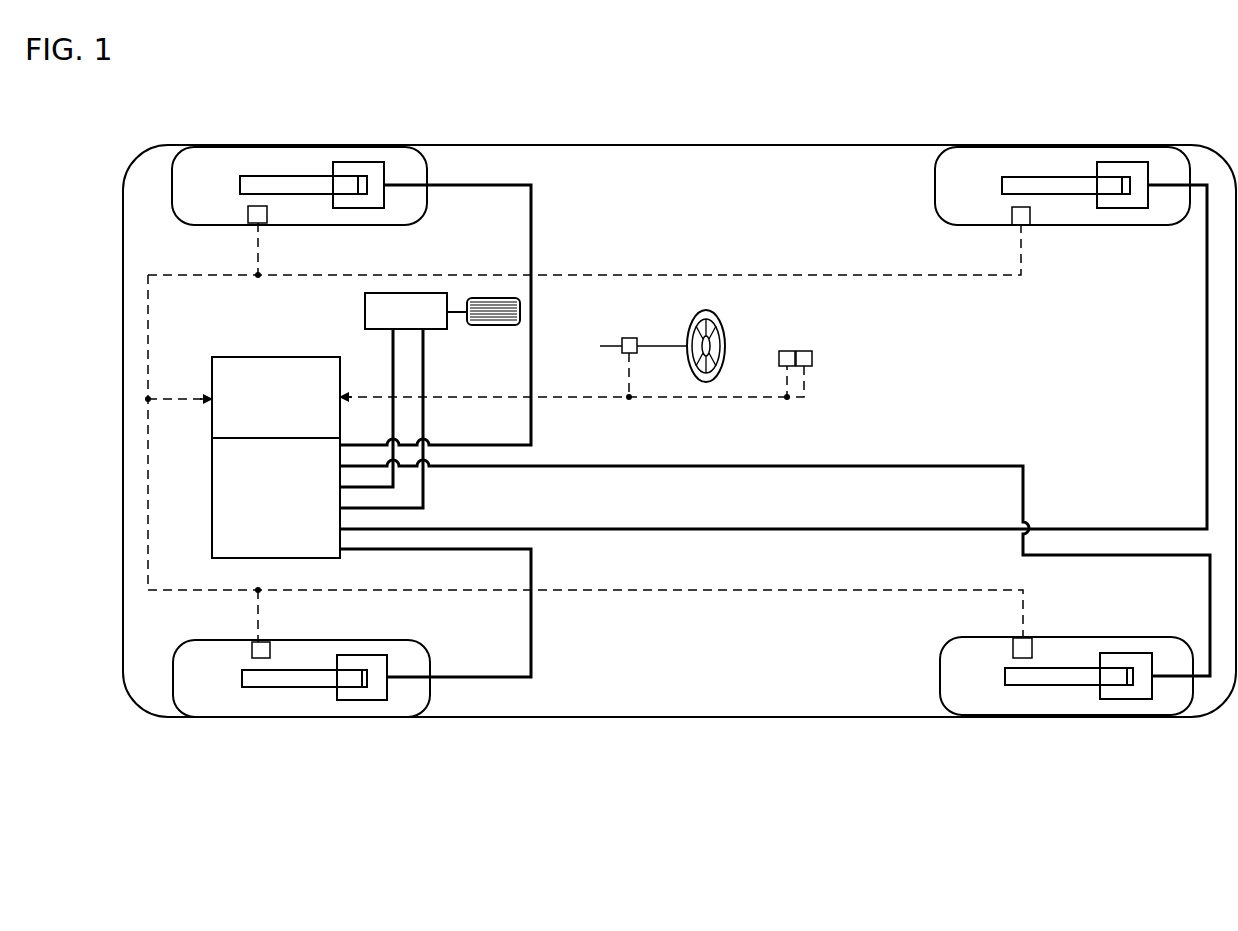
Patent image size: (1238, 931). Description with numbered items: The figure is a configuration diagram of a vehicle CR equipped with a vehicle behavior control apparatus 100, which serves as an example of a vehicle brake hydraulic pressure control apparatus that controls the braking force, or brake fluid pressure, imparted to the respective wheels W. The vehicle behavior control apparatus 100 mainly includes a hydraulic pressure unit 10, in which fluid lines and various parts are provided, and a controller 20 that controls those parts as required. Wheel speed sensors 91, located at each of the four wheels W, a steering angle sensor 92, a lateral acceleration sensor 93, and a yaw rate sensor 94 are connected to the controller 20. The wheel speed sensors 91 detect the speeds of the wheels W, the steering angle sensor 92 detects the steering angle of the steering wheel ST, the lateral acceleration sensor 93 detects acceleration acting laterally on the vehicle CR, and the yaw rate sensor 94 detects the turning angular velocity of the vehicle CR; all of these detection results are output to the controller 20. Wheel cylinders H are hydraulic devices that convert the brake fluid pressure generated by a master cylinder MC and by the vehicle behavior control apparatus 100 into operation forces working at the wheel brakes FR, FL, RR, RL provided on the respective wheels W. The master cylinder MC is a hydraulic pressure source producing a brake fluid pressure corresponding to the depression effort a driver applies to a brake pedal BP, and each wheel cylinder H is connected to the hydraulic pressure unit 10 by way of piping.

The vehicle behavior control apparatus 100 is at (198, 463).
The hydraulic pressure unit 10 is at (212, 505).
The controller 20 is at (212, 378).
The wheel speed sensor 91 is at (267, 215).
The steering angle sensor 92 is at (629, 338).
The lateral acceleration sensor 93 is at (787, 350).
The yaw rate sensor 94 is at (805, 350).
The vehicle CR is at (709, 133).
The wheel W is at (297, 158).
The wheel cylinder H is at (358, 168).
The wheel brake FR is at (258, 180).
The wheel brake FL is at (262, 690).
The wheel brake RR is at (1020, 183).
The wheel brake RL is at (1022, 678).
The master cylinder MC is at (365, 310).
The brake pedal BP is at (499, 326).
The steering wheel ST is at (727, 330).